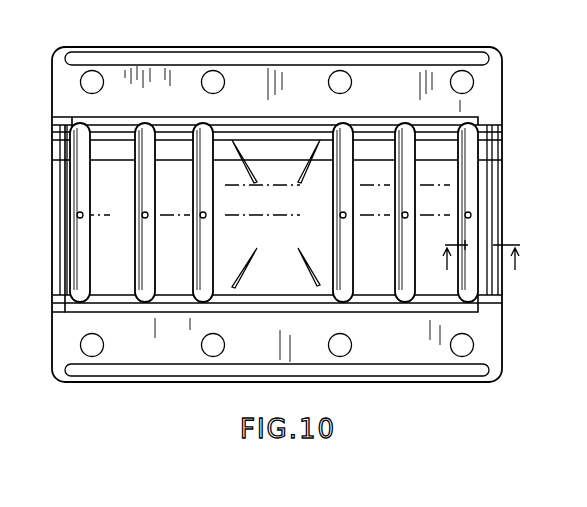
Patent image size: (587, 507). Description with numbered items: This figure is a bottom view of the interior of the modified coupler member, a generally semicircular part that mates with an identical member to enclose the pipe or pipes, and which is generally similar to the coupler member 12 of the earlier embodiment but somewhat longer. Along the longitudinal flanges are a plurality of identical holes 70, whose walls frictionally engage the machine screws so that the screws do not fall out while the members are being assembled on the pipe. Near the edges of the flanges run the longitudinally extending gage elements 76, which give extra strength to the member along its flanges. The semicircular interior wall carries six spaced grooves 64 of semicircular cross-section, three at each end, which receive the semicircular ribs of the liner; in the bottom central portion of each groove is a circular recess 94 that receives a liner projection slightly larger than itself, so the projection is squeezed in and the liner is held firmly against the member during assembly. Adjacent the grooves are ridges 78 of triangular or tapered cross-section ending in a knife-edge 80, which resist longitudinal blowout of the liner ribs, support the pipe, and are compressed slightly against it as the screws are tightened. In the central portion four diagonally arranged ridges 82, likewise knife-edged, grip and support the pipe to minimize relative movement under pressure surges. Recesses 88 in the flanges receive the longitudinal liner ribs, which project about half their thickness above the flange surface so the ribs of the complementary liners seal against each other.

The holes 70 is at (213, 78).
The gage elements or projections 76 is at (392, 62).
The grooves 64 is at (82, 128).
The knife-edge 80 is at (65, 170).
The ridge 78 is at (65, 263).
The recesses 94 is at (142, 216).
The recesses 88 is at (295, 125).
The diagonally arranged ridges 82 is at (308, 173).
The coupler member 12 is at (486, 267).